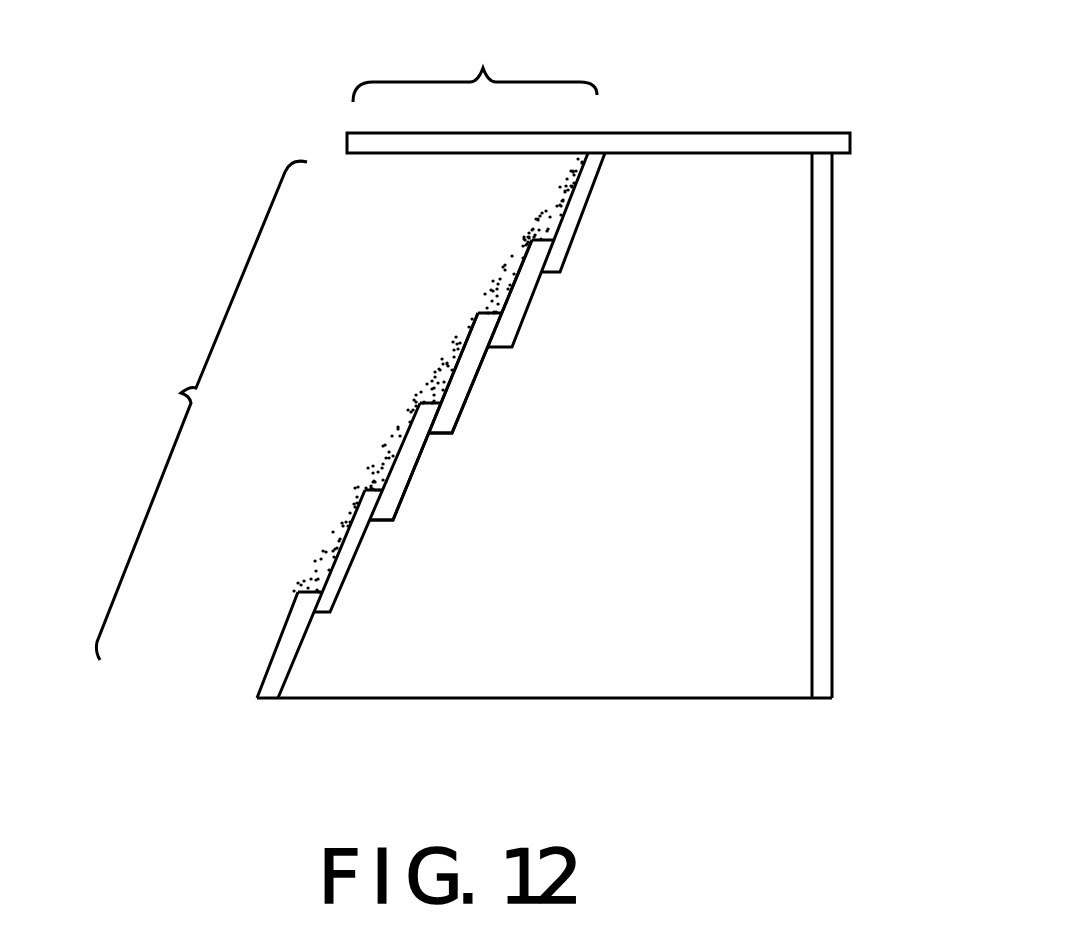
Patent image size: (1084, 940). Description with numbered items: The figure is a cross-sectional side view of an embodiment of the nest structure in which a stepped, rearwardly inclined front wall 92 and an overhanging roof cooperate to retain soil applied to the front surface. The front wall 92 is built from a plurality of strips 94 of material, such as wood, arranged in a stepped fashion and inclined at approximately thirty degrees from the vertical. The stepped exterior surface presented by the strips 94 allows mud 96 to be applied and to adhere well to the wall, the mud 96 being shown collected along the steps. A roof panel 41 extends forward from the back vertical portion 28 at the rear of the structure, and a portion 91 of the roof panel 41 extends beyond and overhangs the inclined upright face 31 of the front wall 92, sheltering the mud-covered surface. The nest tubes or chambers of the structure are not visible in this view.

The back vertical portion 28 is at (818, 390).
The inclined upright face 31 is at (413, 425).
The roof panel 41 is at (713, 133).
The overhanging portion 91 is at (475, 60).
The stepped front wall 92 is at (342, 517).
The strips 94 is at (465, 402).
The mud 96 is at (487, 278).